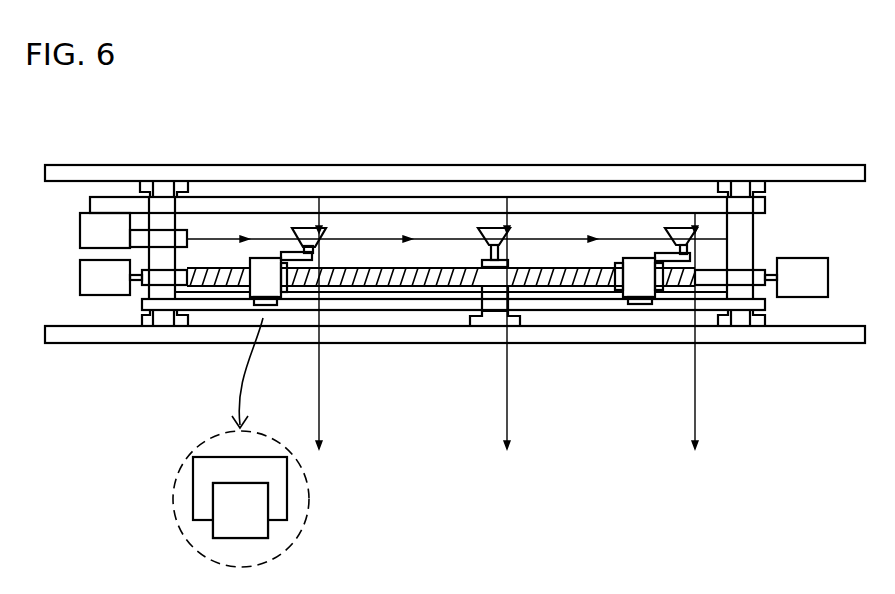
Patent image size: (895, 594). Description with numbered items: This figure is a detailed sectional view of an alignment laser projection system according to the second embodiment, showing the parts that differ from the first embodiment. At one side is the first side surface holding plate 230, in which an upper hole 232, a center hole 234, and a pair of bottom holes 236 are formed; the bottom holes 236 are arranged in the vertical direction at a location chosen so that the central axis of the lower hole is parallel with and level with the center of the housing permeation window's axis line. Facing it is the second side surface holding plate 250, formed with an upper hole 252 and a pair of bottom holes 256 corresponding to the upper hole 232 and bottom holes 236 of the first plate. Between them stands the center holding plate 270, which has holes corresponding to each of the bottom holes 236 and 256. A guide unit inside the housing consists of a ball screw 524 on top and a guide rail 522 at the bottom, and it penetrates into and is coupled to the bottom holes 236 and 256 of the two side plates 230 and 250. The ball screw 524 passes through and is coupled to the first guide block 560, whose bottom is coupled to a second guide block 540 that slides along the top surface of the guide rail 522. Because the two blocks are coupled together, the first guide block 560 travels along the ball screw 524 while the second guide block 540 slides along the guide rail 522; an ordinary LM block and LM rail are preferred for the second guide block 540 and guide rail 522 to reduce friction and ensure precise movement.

The first side surface holding plate 230 is at (167, 184).
The upper hole 232 is at (152, 182).
The center hole 234 is at (158, 228).
The pair of bottom holes 236 is at (153, 288).
The second side surface holding plate 250 is at (742, 243).
The upper hole 252 is at (743, 196).
The pair of bottom holes 256 is at (753, 287).
The center holding plate 270 is at (492, 320).
The guide rail 522 is at (210, 305).
The ball screw 524 is at (177, 313).
The second guide block 540 is at (278, 473).
The first guide block 560 is at (275, 312).